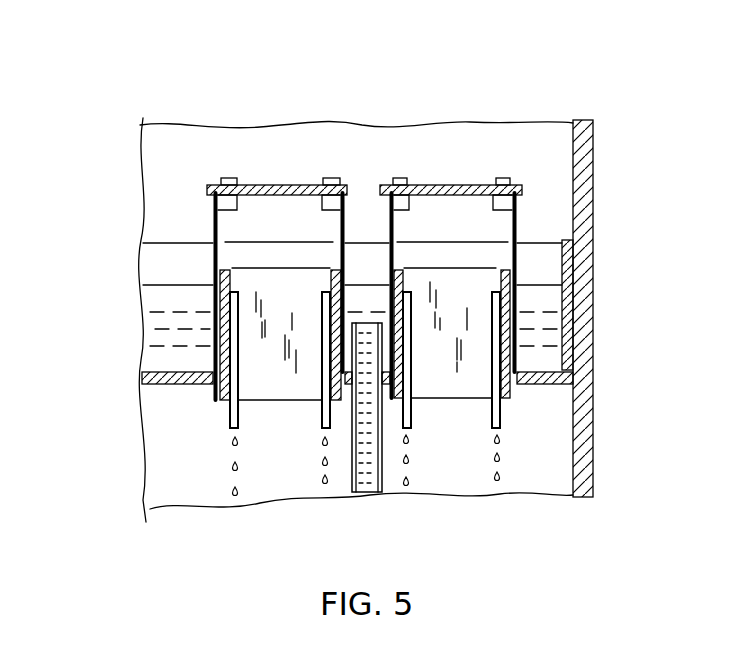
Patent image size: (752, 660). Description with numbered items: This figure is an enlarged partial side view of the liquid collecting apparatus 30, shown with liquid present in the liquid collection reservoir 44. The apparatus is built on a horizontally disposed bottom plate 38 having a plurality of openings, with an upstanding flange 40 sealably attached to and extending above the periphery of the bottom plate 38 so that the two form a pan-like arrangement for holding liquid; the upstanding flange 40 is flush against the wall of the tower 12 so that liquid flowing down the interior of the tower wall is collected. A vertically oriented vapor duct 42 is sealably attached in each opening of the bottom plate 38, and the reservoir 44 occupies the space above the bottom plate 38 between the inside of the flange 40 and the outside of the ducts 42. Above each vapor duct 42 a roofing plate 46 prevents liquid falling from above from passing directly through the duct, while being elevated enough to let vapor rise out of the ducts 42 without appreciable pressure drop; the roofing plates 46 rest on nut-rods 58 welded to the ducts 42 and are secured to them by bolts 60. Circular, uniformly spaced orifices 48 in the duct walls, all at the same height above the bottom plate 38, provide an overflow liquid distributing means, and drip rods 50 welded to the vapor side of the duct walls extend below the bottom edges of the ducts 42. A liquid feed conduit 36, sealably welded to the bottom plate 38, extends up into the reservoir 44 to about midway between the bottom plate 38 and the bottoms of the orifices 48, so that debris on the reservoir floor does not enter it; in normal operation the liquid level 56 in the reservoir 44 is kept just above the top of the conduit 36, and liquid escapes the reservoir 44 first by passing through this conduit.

The tower 12 is at (593, 164).
The liquid collecting apparatus 30 is at (262, 50).
The liquid feed conduit 36 is at (354, 478).
The bottom plate 38 is at (157, 387).
The upstanding flange 40 is at (365, 238).
The vapor duct 42 is at (215, 248).
The liquid collection reservoir 44 is at (150, 343).
The roofing plate 46 is at (302, 185).
The orifice 48 is at (503, 298).
The drip rod 50 is at (242, 418).
The liquid level 56 is at (158, 285).
The nut-rod 58 is at (243, 268).
The bolt 60 is at (233, 178).